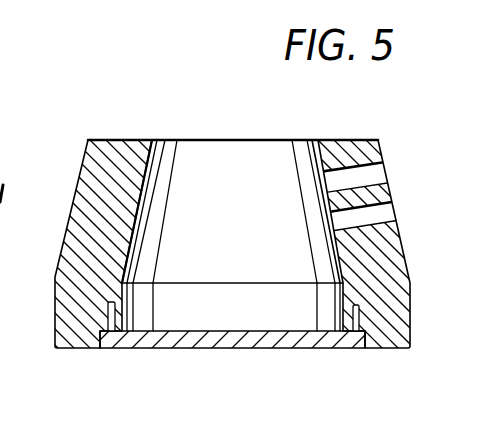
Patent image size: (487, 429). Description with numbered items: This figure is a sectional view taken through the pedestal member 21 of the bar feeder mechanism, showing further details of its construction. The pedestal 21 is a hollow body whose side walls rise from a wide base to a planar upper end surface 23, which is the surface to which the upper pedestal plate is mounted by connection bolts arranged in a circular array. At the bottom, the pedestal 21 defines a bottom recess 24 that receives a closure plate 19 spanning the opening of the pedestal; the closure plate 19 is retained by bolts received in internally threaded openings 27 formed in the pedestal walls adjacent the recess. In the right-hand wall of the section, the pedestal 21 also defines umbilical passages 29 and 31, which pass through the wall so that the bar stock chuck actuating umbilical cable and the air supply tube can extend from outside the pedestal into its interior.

The closure plate 19 is at (197, 247).
The pedestal member 21 is at (95, 176).
The upper end surface 23 is at (126, 139).
The bottom recess 24 is at (278, 333).
The internally threaded openings 27 is at (357, 318).
The umbilical passage 29 is at (372, 175).
The umbilical passage 31 is at (385, 218).